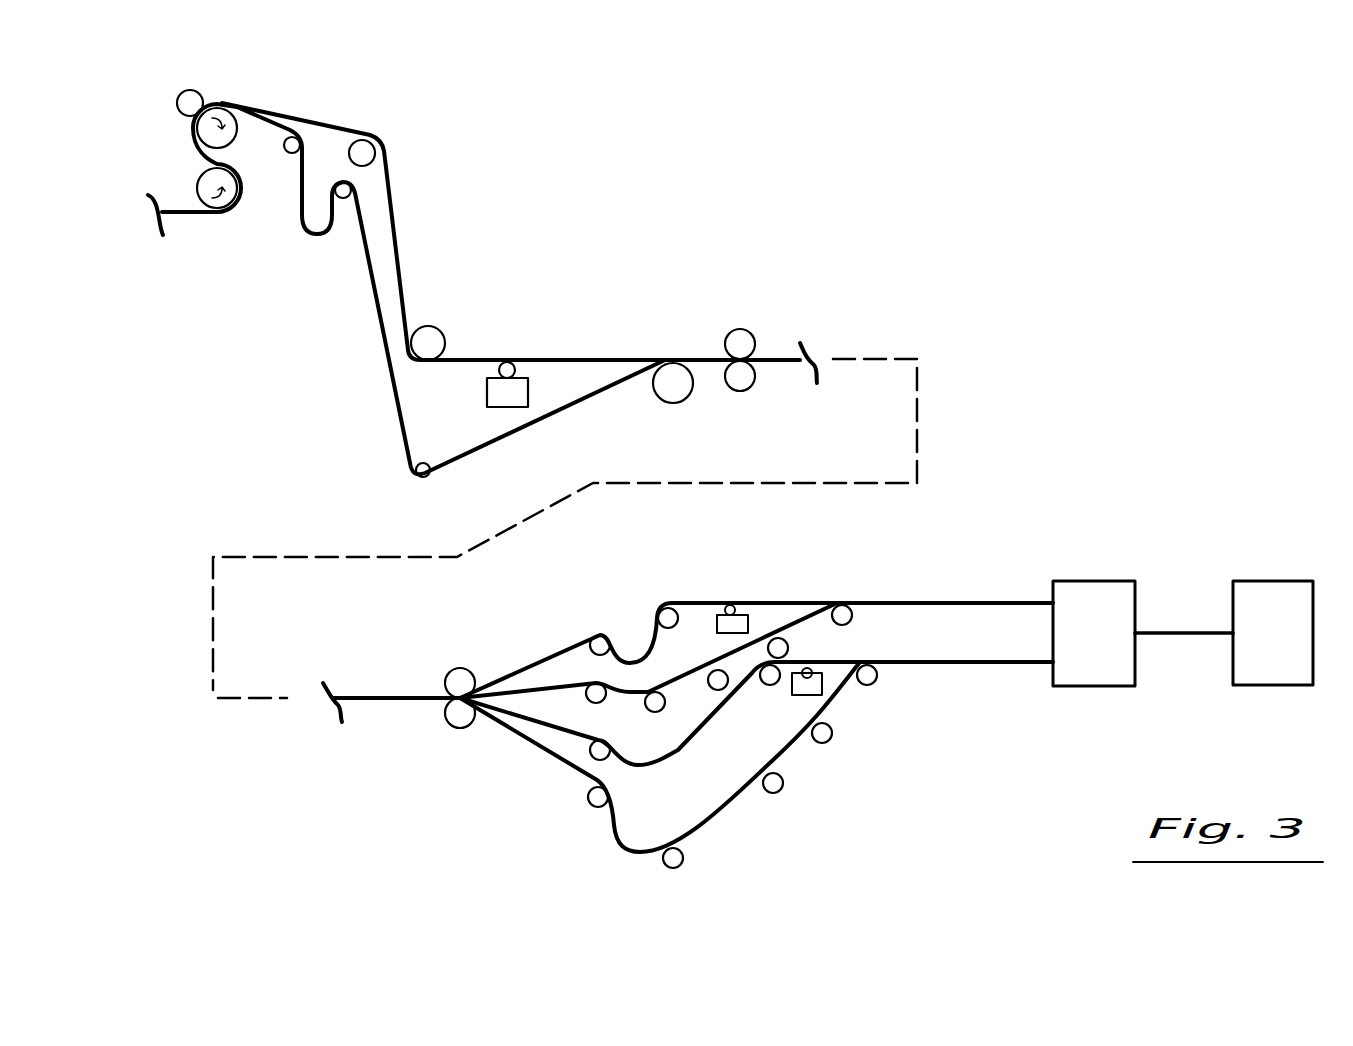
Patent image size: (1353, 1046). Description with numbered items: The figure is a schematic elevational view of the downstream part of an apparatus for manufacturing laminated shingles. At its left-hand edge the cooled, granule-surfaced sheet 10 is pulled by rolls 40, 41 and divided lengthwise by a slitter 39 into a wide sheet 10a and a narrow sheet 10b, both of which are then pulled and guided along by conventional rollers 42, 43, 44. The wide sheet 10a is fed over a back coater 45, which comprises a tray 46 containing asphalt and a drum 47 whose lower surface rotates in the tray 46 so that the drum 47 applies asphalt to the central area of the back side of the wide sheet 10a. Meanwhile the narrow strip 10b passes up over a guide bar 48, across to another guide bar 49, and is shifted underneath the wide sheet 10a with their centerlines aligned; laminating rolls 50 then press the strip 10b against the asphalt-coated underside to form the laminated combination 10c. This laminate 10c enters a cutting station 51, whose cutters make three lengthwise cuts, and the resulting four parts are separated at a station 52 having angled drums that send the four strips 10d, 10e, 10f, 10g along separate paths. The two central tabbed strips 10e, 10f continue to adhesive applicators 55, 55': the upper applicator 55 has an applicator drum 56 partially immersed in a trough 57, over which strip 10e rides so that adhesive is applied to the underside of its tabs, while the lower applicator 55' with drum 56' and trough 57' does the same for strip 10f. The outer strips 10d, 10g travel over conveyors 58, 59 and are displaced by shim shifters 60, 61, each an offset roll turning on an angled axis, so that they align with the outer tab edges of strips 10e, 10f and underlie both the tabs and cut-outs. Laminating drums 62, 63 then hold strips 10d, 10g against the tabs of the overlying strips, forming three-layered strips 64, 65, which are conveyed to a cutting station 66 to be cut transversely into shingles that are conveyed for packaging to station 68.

The sheet 10 is at (193, 215).
The wide sheet 10a is at (390, 202).
The narrow sheet 10b is at (323, 238).
The laminated combination 10c is at (767, 356).
The strip 10d is at (668, 683).
The strip 10e is at (690, 602).
The strip 10f is at (683, 750).
The strip 10g is at (618, 820).
The slitter 39 is at (203, 100).
The roll 40 is at (204, 176).
The roll 41 is at (199, 137).
The roller 42 is at (370, 146).
The roller 43 is at (433, 325).
The roller 44 is at (277, 110).
The back coater 45 is at (534, 347).
The tray 46 is at (530, 388).
The drum 47 is at (500, 368).
The guide bar 48 is at (333, 184).
The guide bar 49 is at (430, 477).
The laminating rolls 50 is at (738, 328).
The cutting station 51 is at (455, 668).
The station 52 is at (588, 637).
The upper adhesive applicator 55 is at (774, 586).
The lower adhesive applicator 55' is at (855, 661).
The applicator drum 56 is at (746, 577).
The applicator drum 56' is at (842, 697).
The trough 57 is at (791, 597).
The trough 57' is at (764, 691).
The conveyor 58 is at (650, 708).
The conveyor 59 is at (785, 784).
The shim shifter 60 is at (788, 647).
The shim shifter 61 is at (832, 736).
The laminating drum 62 is at (857, 603).
The laminating drum 63 is at (878, 680).
The three-layered strip 64 is at (945, 602).
The three-layered strip 65 is at (965, 665).
The cutting station 66 is at (1077, 687).
The station 68 is at (1280, 688).